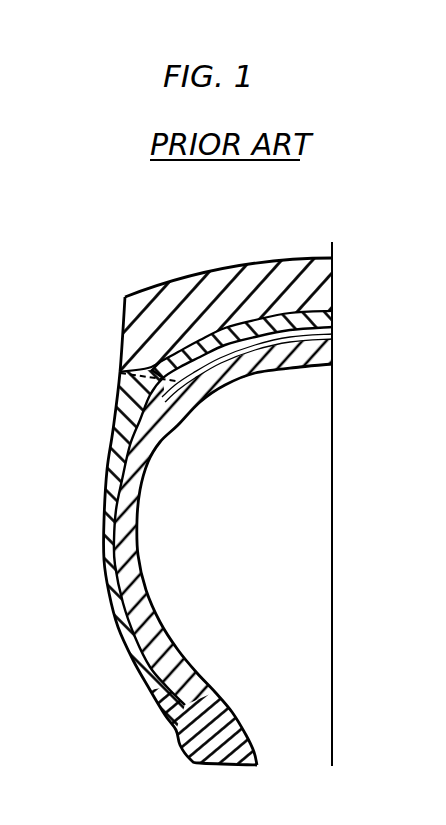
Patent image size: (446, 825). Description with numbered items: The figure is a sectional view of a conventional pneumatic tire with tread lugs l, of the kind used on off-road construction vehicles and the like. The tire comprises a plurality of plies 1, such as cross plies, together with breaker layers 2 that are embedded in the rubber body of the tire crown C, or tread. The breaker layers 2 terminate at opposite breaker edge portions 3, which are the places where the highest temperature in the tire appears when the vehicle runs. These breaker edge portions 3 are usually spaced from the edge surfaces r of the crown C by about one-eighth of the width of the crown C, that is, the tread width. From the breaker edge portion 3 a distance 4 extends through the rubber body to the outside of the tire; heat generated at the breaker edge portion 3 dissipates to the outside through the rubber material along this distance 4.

The tire crown C is at (260, 273).
The breaker layer 2 is at (238, 333).
The lug l is at (188, 279).
The breaker edge portion 3 is at (175, 366).
The ply 1 is at (133, 506).
The distance from breaker edge portion to tire outside 4 is at (118, 375).
The edge surface of the crown r is at (122, 332).